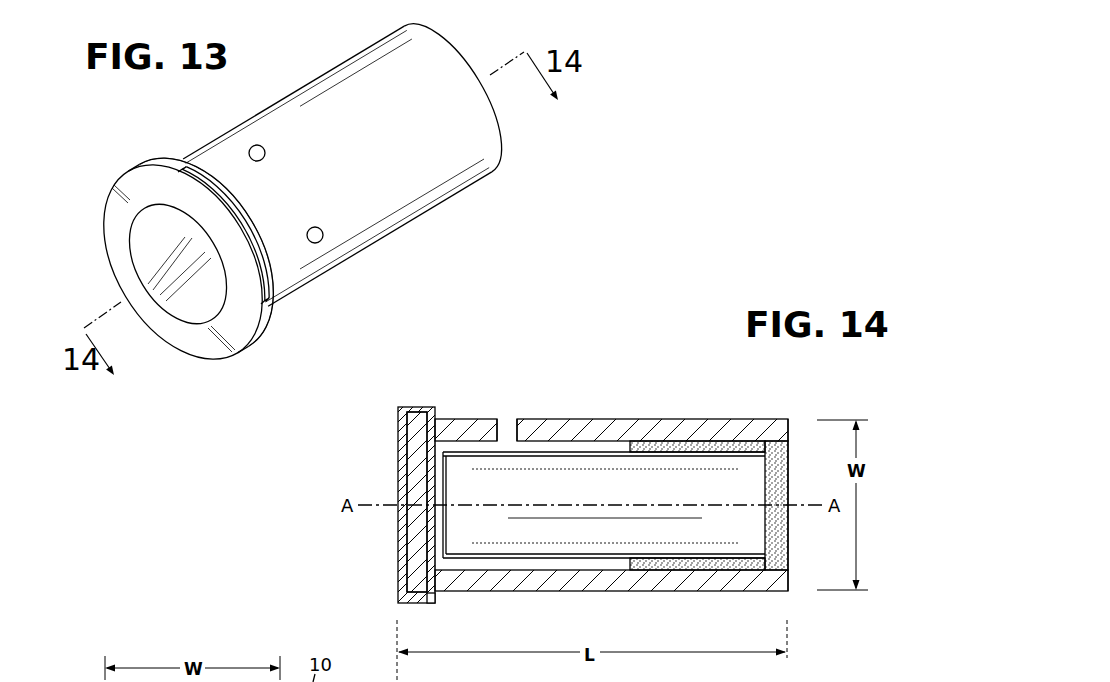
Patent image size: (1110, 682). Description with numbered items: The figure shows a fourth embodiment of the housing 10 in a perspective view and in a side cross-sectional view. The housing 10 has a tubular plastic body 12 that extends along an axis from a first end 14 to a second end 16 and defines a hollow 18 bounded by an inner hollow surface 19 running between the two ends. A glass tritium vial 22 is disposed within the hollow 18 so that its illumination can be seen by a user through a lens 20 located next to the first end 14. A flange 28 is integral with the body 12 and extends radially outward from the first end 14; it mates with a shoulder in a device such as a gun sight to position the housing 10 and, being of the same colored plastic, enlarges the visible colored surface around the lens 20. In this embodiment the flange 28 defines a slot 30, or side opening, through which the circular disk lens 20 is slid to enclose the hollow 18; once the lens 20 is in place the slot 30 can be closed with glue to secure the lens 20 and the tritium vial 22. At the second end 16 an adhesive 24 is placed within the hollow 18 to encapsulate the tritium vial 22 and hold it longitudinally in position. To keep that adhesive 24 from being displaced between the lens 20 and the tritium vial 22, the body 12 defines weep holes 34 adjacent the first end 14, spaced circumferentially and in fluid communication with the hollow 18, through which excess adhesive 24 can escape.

In FIG. 13, the housing 10 is at (269, 66).
In FIG. 14, the housing 10 is at (652, 386).
In FIG. 13, the body 12 is at (467, 120).
In FIG. 14, the body 12 is at (663, 592).
In FIG. 13, the first end 14 is at (115, 247).
In FIG. 14, the first end 14 is at (398, 428).
In FIG. 13, the second end 16 is at (440, 27).
In FIG. 14, the second end 16 is at (787, 432).
In FIG. 14, the hollow 18 is at (443, 562).
In FIG. 14, the inner hollow surface 19 is at (563, 562).
In FIG. 13, the lens 20 is at (152, 240).
In FIG. 14, the lens 20 is at (415, 542).
In FIG. 14, the tritium vial 22 is at (620, 480).
In FIG. 14, the adhesive 24 is at (780, 548).
In FIG. 13, the flange 28 is at (253, 323).
In FIG. 14, the flange 28 is at (413, 407).
In FIG. 13, the slot 30 is at (232, 237).
In FIG. 14, the slot 30 is at (418, 594).
In FIG. 13, the weep hole 34 is at (254, 147).
In FIG. 14, the weep hole 34 is at (512, 432).